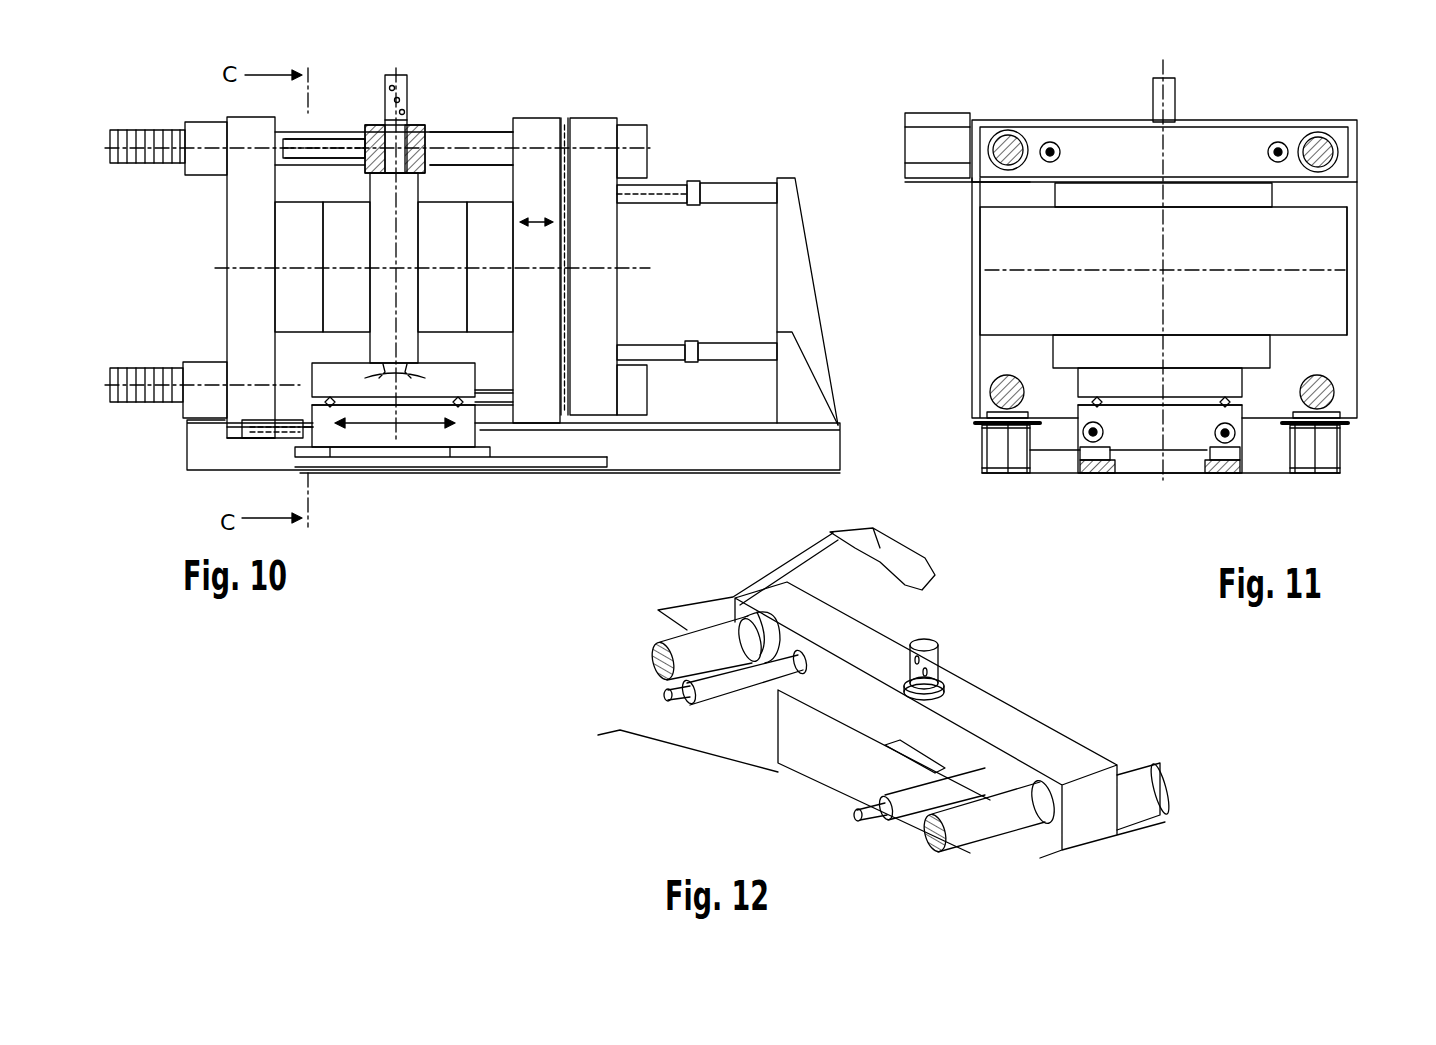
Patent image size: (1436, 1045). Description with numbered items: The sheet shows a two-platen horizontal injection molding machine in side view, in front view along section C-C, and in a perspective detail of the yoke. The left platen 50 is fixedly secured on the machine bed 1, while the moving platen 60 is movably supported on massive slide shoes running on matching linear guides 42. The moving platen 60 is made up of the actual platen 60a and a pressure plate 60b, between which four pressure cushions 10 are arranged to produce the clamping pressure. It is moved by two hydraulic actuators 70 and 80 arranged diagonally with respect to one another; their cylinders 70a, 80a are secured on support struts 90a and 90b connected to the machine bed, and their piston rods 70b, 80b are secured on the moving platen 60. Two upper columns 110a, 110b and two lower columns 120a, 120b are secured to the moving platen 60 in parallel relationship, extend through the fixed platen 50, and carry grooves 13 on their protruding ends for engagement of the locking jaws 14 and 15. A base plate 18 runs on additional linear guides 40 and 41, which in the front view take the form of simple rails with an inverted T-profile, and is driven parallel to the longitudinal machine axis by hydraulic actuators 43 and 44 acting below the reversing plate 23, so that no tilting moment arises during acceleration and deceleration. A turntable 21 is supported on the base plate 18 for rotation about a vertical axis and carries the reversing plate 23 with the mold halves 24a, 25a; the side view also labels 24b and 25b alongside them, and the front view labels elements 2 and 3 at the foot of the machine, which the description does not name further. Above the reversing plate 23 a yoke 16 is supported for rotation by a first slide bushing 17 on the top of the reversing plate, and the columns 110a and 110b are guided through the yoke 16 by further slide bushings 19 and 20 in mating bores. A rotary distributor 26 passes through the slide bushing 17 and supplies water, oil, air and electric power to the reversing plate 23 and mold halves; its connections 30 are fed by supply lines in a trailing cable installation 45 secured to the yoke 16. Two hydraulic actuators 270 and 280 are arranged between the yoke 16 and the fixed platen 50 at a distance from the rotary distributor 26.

In FIG. 10, the machine bed 1 is at (855, 432).
In FIG. 11, the machine bed 1 is at (1357, 474).
In FIG. 10, the base 2 is at (745, 450).
In FIG. 11, the base 2 is at (1000, 475).
In FIG. 10, the support pad 3 is at (530, 440).
In FIG. 11, the support pad 3 is at (1022, 412).
In FIG. 10, the pressure cushion 10 is at (568, 200).
In FIG. 10, the groove 13 is at (150, 160).
In FIG. 10, the locking jaw 14 is at (215, 130).
In FIG. 10, the locking jaw 15 is at (210, 170).
In FIG. 10, the yoke 16 is at (368, 125).
In FIG. 11, the yoke 16 is at (1120, 140).
In FIG. 12, the yoke 16 is at (995, 715).
In FIG. 10, the first slide bushing 17 is at (365, 178).
In FIG. 11, the first slide bushing 17 is at (1150, 183).
In FIG. 12, the first slide bushing 17 is at (905, 755).
In FIG. 10, the base plate 18 is at (360, 440).
In FIG. 11, the base plate 18 is at (1175, 445).
In FIG. 12, the slide bushing 19 is at (768, 600).
In FIG. 12, the slide bushing 20 is at (1045, 790).
In FIG. 10, the turntable 21 is at (335, 365).
In FIG. 11, the turntable 21 is at (1240, 378).
In FIG. 10, the reversing plate 23 is at (410, 195).
In FIG. 11, the reversing plate 23 is at (1210, 337).
In FIG. 12, the reversing plate 23 is at (830, 765).
In FIG. 10, the mold half 24a is at (366, 246).
In FIG. 11, the mold half 24a is at (1283, 254).
In FIG. 12, the mold half 24a is at (745, 770).
In FIG. 10, the holder section 24b is at (318, 246).
In FIG. 10, the mold half 25a is at (462, 246).
In FIG. 10, the holder section 25b is at (510, 246).
In FIG. 10, the rotary distributor 26 is at (420, 80).
In FIG. 11, the rotary distributor 26 is at (1188, 86).
In FIG. 12, the rotary distributor 26 is at (948, 622).
In FIG. 12, the connection 30 is at (950, 685).
In FIG. 10, the linear guide 40 is at (590, 465).
In FIG. 11, the linear guide 40 is at (1100, 475).
In FIG. 11, the linear guide 41 is at (1220, 475).
In FIG. 11, the linear guide 42 is at (975, 425).
In FIG. 10, the hydraulic actuator 43 is at (270, 432).
In FIG. 11, the hydraulic actuator 43 is at (1085, 440).
In FIG. 11, the hydraulic actuator 44 is at (1235, 442).
In FIG. 11, the trailing cable installation 45 is at (925, 120).
In FIG. 12, the trailing cable installation 45 is at (685, 608).
In FIG. 10, the left platen 50 is at (232, 255).
In FIG. 10, the moving platen 60 is at (623, 113).
In FIG. 10, the actual platen 60a is at (558, 310).
In FIG. 11, the actual platen 60a is at (1340, 345).
In FIG. 10, the pressure plate 60b is at (616, 310).
In FIG. 10, the hydraulic actuator 70 is at (684, 172).
In FIG. 10, the cylinder 70a is at (745, 183).
In FIG. 10, the piston rod 70b is at (637, 195).
In FIG. 10, the hydraulic actuator 80 is at (697, 368).
In FIG. 10, the cylinder 80a is at (725, 350).
In FIG. 10, the piston rod 80b is at (630, 343).
In FIG. 10, the support strut 90a is at (790, 255).
In FIG. 10, the support strut 90b is at (795, 352).
In FIG. 10, the column 110a is at (465, 130).
In FIG. 11, the column 110a is at (1005, 133).
In FIG. 12, the column 110a is at (655, 663).
In FIG. 11, the column 110b is at (1320, 133).
In FIG. 12, the column 110b is at (962, 852).
In FIG. 10, the column 120a is at (440, 455).
In FIG. 11, the column 120a is at (992, 383).
In FIG. 11, the column 120b is at (1335, 388).
In FIG. 11, the hydraulic actuator 270 is at (1052, 142).
In FIG. 12, the hydraulic actuator 270 is at (728, 695).
In FIG. 11, the hydraulic actuator 280 is at (1276, 142).
In FIG. 12, the hydraulic actuator 280 is at (915, 815).